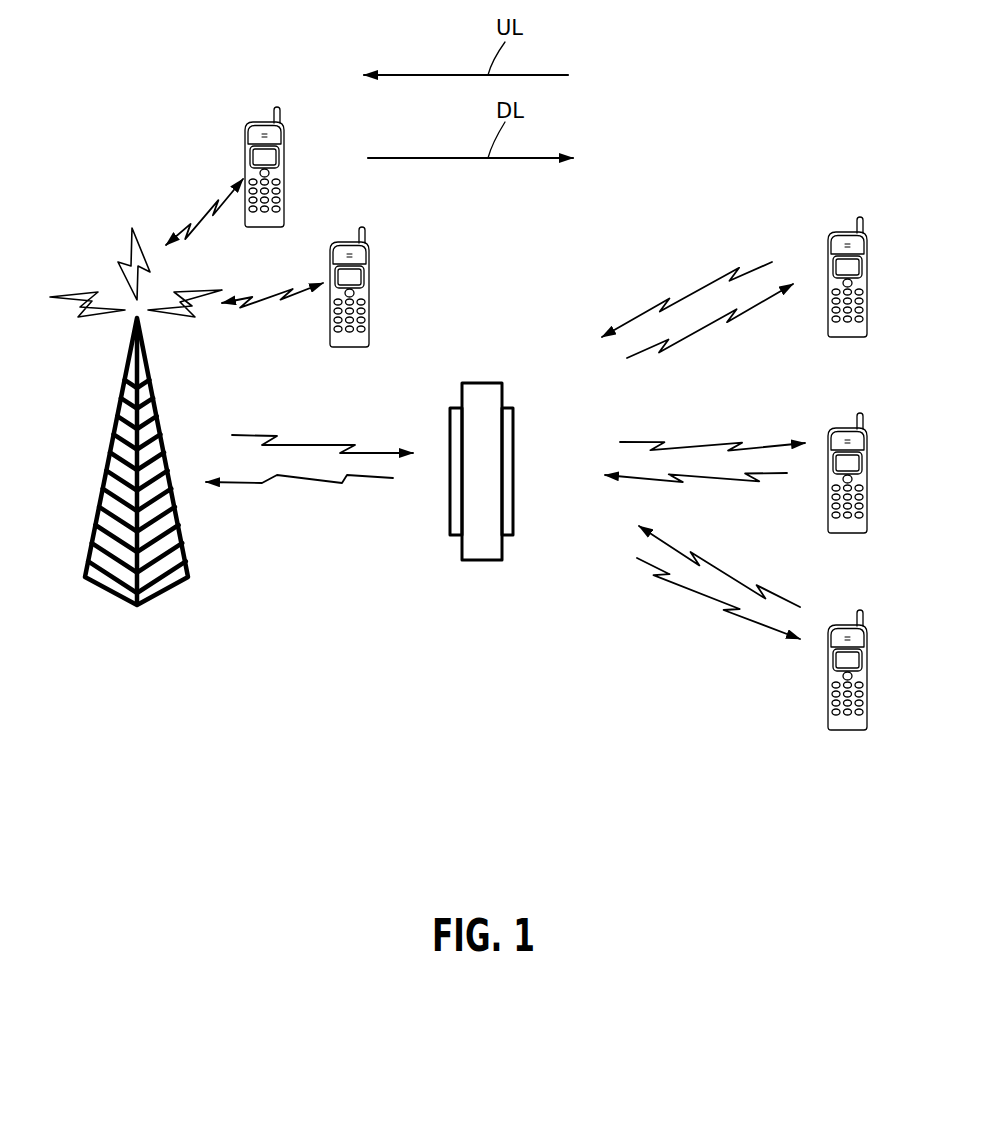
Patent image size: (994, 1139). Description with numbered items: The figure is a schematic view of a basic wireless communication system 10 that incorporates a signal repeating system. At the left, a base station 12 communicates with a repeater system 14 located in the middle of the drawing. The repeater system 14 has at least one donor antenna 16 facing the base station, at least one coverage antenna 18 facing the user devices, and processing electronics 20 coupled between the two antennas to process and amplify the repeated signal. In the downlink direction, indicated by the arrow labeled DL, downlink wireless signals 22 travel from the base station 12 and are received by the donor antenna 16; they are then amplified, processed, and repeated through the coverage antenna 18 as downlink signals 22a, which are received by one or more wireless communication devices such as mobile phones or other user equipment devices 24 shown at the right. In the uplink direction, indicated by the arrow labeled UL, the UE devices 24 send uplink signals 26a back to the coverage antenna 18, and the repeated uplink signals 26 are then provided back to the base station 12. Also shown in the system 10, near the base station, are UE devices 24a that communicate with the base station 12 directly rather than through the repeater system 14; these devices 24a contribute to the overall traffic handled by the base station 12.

The wireless communication system 10 is at (580, 252).
The base station 12 is at (153, 380).
The repeater system 14 is at (503, 314).
The donor antenna 16 is at (449, 425).
The coverage antenna 18 is at (515, 460).
The processing electronics 20 is at (501, 380).
The downlink wireless signals 22 is at (318, 445).
The repeated downlink signals 22a is at (727, 438).
The user equipment device 24 is at (863, 280).
The direct-communicating UE device 24a is at (256, 121).
The repeated uplink signals 26 is at (305, 483).
The uplink signals 26a is at (706, 288).